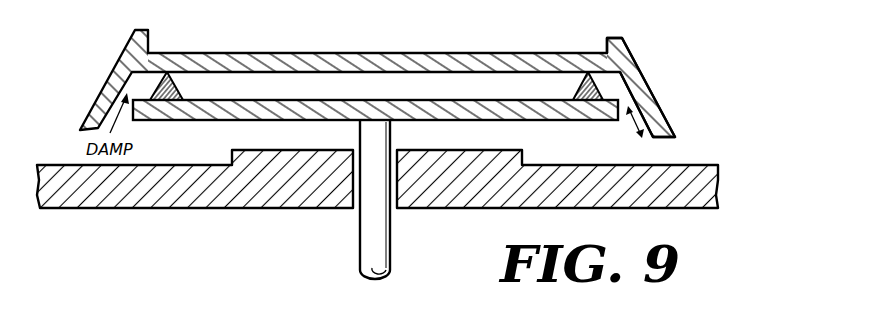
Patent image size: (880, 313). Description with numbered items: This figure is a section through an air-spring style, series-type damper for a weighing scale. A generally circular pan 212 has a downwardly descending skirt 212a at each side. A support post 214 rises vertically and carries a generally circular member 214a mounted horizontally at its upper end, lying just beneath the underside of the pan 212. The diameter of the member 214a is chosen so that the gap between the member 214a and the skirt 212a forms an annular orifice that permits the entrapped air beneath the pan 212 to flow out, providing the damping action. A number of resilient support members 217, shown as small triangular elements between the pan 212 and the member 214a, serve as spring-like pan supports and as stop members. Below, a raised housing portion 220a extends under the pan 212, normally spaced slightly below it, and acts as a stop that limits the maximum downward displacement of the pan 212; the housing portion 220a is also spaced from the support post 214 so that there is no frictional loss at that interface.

The weighing pan 212 is at (403, 53).
The skirt 212a is at (650, 93).
The resilient support members 217 is at (174, 83).
The circular member 214a is at (553, 122).
The support post 214 is at (391, 245).
The housing portion 220a is at (287, 150).